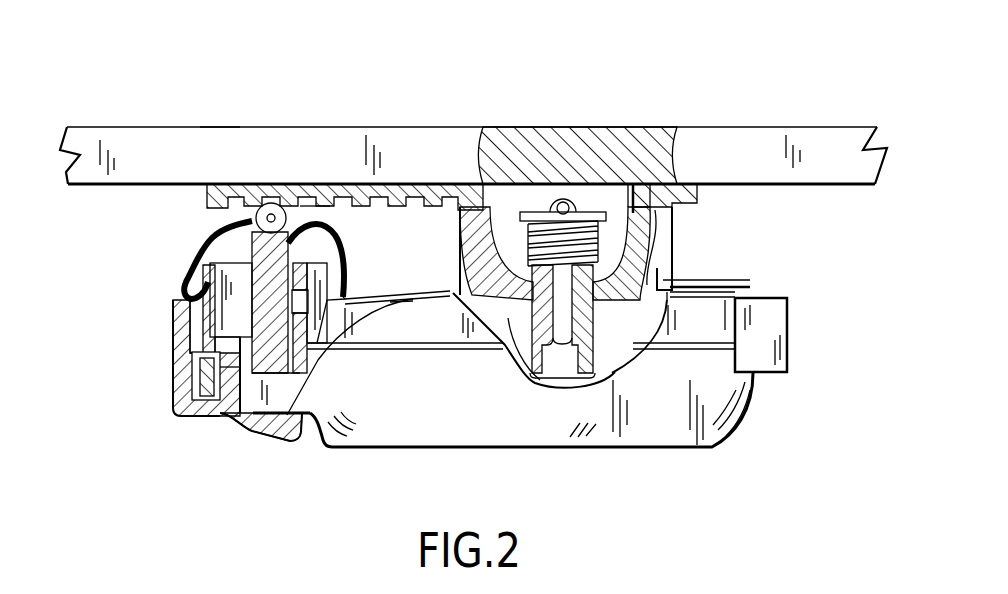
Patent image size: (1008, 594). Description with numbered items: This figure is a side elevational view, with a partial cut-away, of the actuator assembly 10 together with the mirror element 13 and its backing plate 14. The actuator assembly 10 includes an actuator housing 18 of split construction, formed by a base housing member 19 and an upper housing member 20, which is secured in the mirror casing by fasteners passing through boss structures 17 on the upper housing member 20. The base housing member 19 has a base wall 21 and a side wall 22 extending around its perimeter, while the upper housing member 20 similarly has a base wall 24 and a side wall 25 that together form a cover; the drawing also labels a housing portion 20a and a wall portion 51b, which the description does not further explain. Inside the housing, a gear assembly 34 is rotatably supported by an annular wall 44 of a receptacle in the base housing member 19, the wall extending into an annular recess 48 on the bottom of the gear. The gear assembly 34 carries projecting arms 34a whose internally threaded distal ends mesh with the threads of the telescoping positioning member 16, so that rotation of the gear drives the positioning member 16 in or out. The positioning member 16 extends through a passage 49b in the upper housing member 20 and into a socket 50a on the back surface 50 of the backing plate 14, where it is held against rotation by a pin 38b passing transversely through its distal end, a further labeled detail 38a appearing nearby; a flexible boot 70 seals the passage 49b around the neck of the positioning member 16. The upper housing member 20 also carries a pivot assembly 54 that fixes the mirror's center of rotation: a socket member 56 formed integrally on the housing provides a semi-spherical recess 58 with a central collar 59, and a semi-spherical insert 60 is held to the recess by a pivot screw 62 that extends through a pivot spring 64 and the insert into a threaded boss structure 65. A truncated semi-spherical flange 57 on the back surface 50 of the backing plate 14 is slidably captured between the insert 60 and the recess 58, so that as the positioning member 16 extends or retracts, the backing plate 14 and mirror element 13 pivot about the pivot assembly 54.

The actuator assembly 10 is at (806, 292).
The mirror element 13 is at (422, 126).
The backing plate 14 is at (217, 126).
The positioning member 16 is at (178, 339).
The boss structures 17 is at (767, 327).
The actuator housing 18 is at (740, 435).
The base housing member 19 is at (360, 448).
The upper housing member 20 is at (391, 290).
The cavity wall 20a is at (178, 330).
The base wall 21 is at (612, 380).
The side wall 22 is at (413, 403).
The base wall 24 is at (752, 285).
The side wall 25 is at (433, 327).
The gear assembly 34 is at (180, 363).
The projecting arms 34a is at (292, 443).
The rack teeth 38a is at (397, 126).
The pin 38b is at (272, 126).
The annular wall 44 is at (194, 410).
The annular recess 48 is at (184, 384).
The passage 49b is at (414, 305).
The back surface 50 is at (225, 209).
The sockets 50a is at (325, 126).
The grommet flange 51b is at (190, 270).
The pivot assembly 54 is at (737, 239).
The socket member 56 is at (688, 276).
The semi-spherical flange 57 is at (703, 126).
The semi-spherical recess 58 is at (683, 250).
The central collar 59 is at (510, 358).
The semi-spherical insert 60 is at (637, 126).
The pivot screw 62 is at (520, 126).
The pivot spring 64 is at (507, 235).
The threaded boss structure 65 is at (588, 322).
The boot 70 is at (182, 282).